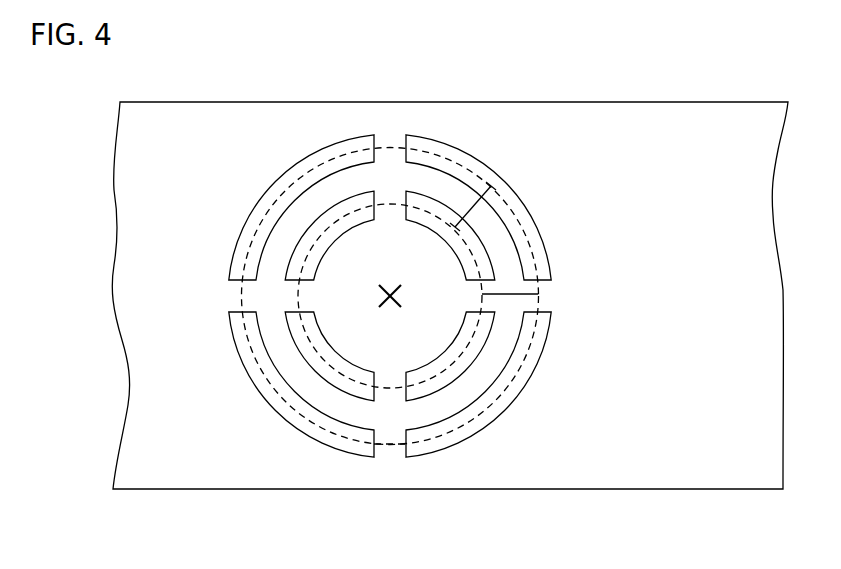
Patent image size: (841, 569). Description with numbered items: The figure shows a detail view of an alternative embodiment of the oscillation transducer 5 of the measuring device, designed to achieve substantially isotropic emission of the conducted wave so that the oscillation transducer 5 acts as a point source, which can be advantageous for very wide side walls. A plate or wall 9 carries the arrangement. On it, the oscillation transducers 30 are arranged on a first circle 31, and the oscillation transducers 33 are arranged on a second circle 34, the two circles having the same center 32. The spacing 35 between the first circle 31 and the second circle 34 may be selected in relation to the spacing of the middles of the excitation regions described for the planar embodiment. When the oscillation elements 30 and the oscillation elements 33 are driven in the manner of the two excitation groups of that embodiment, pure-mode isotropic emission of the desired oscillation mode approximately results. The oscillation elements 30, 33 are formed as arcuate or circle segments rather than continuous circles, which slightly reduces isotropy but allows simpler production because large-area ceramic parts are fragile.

The oscillation transducer 5 is at (421, 293).
The substrate plate 9 is at (636, 122).
The oscillation transducers 30 is at (461, 263).
The first circle 31 is at (538, 294).
The center 32 is at (383, 294).
The oscillation transducers 33 is at (533, 373).
The second circle 34 is at (389, 446).
The spacing 35 is at (470, 210).